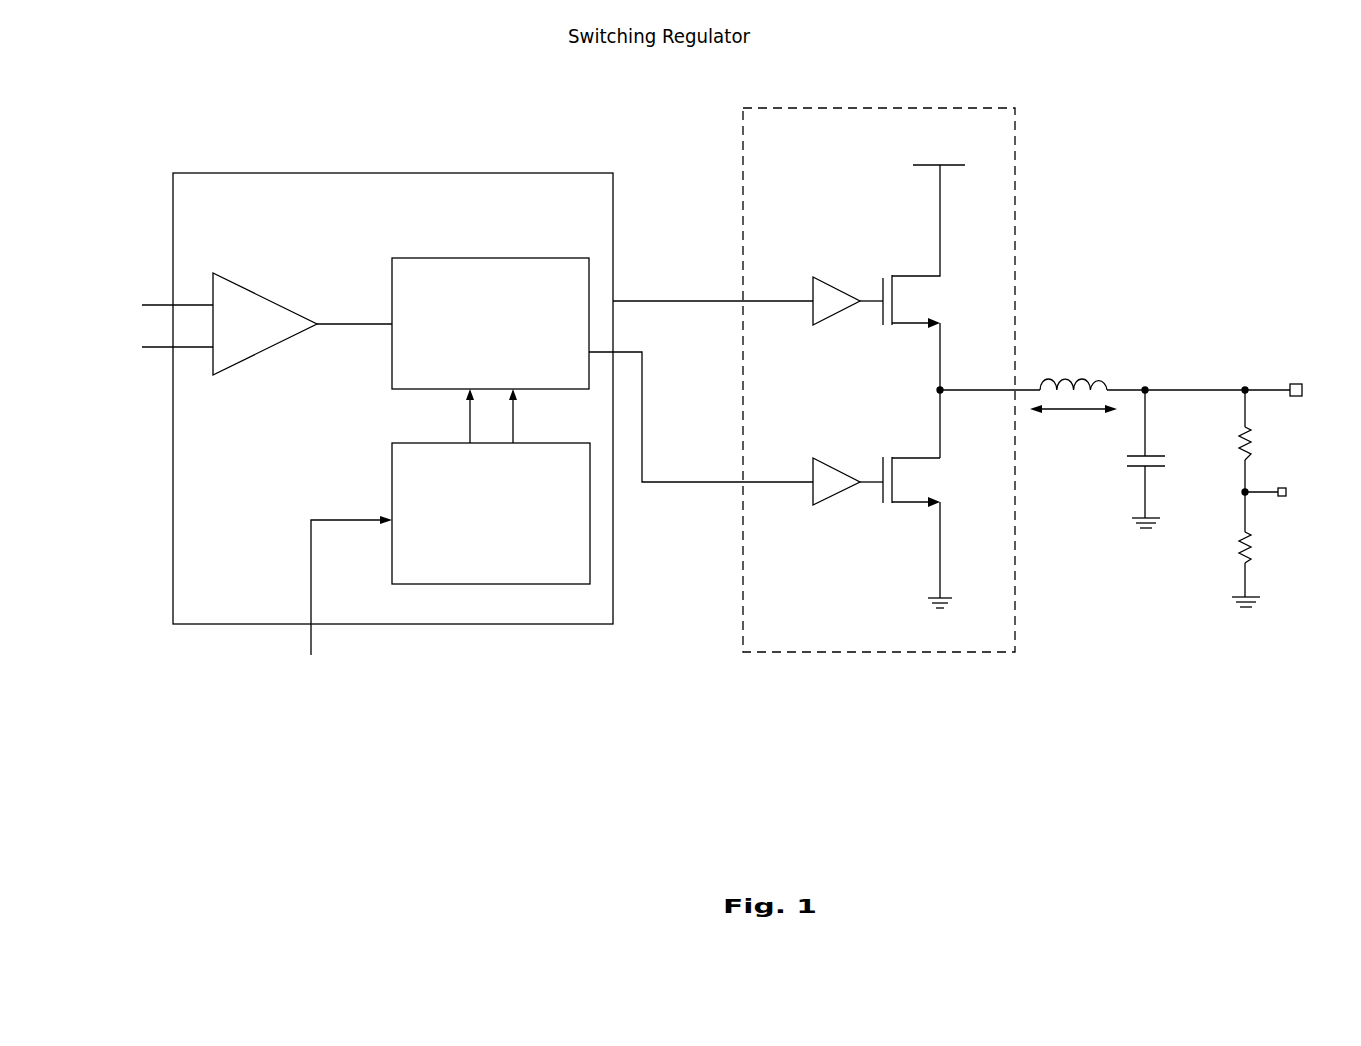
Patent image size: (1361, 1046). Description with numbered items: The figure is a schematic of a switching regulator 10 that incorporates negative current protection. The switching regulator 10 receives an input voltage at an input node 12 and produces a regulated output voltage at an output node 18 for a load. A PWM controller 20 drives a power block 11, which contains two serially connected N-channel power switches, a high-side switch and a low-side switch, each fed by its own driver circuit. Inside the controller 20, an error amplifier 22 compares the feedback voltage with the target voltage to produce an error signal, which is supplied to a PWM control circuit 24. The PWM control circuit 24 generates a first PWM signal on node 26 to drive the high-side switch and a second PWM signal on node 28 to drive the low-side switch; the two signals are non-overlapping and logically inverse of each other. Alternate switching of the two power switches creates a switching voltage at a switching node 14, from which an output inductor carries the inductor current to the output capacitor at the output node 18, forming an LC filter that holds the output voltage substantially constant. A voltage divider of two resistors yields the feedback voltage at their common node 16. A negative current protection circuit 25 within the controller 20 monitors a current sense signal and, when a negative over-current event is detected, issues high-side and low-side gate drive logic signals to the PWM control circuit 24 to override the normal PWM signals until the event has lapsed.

The switching regulator 10 is at (1210, 60).
The power block 11 is at (1015, 150).
The input node 12 is at (948, 167).
The switching node 14 is at (943, 392).
The common node 16 is at (1241, 495).
The output node 18 is at (1267, 388).
The controller 20 is at (490, 173).
The error amplifier 22 is at (260, 353).
The PWM control circuit 24 is at (560, 258).
The negative current protection circuit 25 is at (491, 513).
The node 26 is at (680, 302).
The node 28 is at (672, 484).